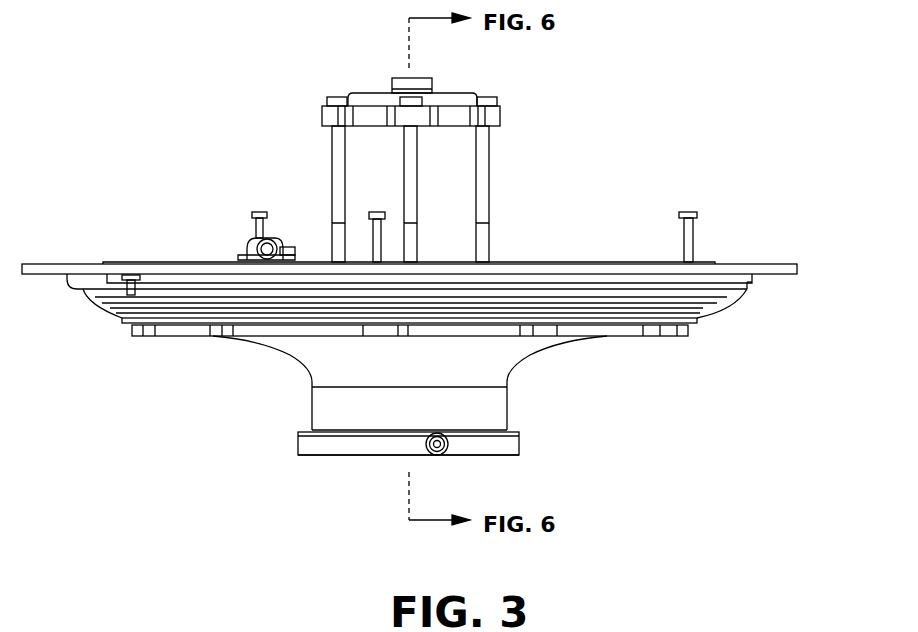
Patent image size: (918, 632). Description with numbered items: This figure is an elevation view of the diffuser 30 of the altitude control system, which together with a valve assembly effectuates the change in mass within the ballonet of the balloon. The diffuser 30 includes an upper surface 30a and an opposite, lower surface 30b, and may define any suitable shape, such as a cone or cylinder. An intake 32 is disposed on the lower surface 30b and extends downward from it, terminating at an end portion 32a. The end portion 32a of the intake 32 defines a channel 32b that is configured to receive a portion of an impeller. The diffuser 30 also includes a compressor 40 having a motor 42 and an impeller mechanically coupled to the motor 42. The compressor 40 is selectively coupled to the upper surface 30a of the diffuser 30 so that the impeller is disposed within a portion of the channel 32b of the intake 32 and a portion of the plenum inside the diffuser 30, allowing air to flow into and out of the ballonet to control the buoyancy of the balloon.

The diffuser 30 is at (656, 104).
The upper surface 30a is at (772, 263).
The lower surface 30b is at (697, 323).
The intake 32 is at (572, 398).
The end portion 32a is at (512, 455).
The channel 32b is at (328, 468).
The compressor 40 is at (310, 145).
The motor 42 is at (500, 115).